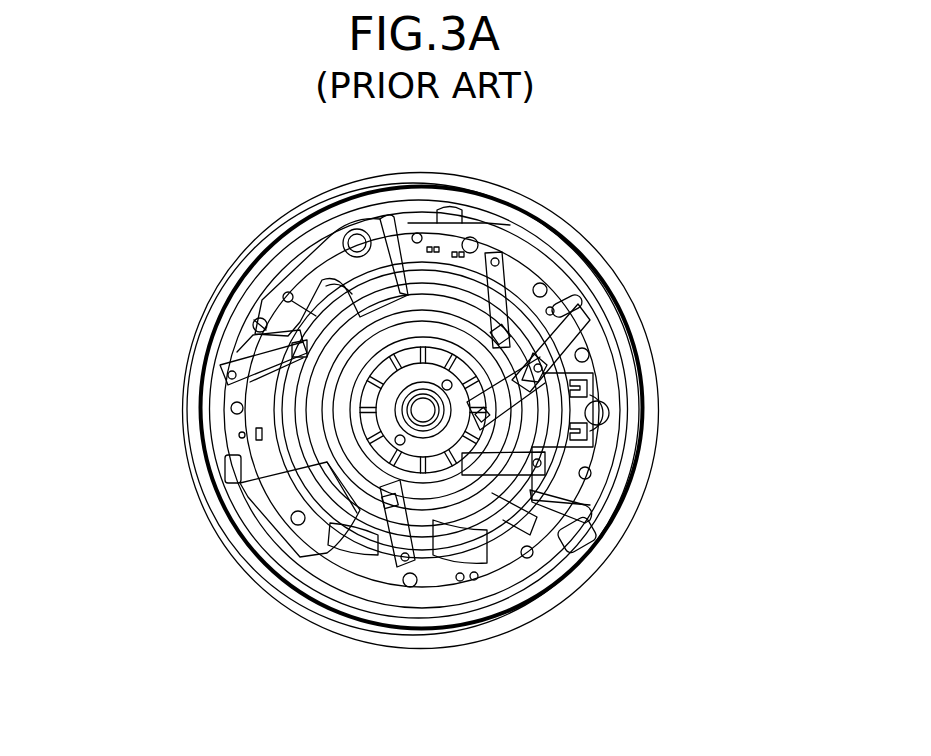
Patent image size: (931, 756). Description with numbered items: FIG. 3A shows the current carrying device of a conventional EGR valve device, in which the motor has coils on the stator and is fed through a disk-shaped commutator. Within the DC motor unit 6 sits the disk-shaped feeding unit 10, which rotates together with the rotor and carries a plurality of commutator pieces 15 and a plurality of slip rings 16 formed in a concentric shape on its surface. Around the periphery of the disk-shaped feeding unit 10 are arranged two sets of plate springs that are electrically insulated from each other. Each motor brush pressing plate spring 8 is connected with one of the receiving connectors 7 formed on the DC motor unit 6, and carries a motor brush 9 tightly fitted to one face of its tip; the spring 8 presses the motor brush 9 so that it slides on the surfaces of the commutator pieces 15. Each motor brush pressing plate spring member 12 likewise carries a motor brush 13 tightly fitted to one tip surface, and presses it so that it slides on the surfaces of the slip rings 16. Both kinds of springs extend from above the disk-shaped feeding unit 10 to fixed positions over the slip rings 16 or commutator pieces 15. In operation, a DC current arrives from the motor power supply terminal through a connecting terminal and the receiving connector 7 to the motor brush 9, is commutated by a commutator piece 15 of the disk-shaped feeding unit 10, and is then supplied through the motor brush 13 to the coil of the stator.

The DC motor unit 6 is at (658, 342).
The receiving connector 7 is at (600, 383).
The motor brush pressing plate spring 8 is at (587, 350).
The motor brush 9 is at (530, 375).
The disk-shaped feeding unit 10 is at (286, 292).
The motor brush pressing plate spring member 12 is at (240, 358).
The motor brush 13 is at (258, 318).
The commutator piece 15 is at (300, 452).
The slip ring 16 is at (345, 428).